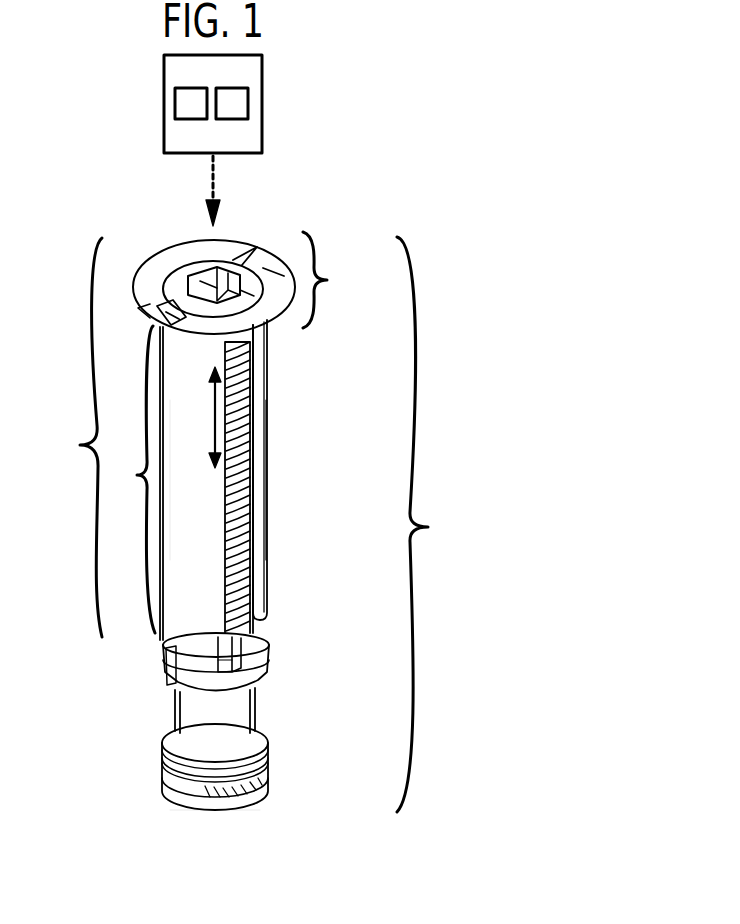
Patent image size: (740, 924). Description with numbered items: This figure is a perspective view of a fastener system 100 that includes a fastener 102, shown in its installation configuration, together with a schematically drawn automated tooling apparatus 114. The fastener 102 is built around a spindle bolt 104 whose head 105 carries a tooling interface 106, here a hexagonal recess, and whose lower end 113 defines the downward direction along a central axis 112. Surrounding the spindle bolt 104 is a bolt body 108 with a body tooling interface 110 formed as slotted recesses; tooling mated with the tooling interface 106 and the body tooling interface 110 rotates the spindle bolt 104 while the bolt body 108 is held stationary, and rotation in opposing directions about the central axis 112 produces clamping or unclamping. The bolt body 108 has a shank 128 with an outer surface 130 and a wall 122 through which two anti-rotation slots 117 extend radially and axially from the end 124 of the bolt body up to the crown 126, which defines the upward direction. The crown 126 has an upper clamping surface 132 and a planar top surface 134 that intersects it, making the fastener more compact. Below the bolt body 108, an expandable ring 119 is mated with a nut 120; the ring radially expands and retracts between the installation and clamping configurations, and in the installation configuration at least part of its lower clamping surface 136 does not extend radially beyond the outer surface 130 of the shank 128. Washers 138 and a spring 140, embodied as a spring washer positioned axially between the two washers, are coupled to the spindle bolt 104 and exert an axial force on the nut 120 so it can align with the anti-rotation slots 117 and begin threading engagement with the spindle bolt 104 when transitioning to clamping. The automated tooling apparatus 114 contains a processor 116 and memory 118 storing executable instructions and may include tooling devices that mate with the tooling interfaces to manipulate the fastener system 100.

The fastener system 100 is at (609, 102).
The fastener 102 is at (431, 524).
The spindle bolt 104 is at (191, 262).
The head 105 is at (254, 296).
The tooling interface 106 is at (224, 272).
The bolt body 108 is at (73, 437).
The body tooling interface 110 is at (159, 310).
The central axis 112 is at (214, 425).
The end 113 is at (229, 822).
The automated tooling apparatus 114 is at (263, 94).
The processor 116 is at (234, 88).
The anti-rotation slots 117 is at (264, 440).
The memory 118 is at (189, 119).
The expandable ring 119 is at (147, 654).
The nut 120 is at (273, 698).
The wall 122 is at (272, 526).
The end 124 is at (203, 662).
The crown 126 is at (245, 283).
The shank 128 is at (185, 480).
The outer surface 130 is at (204, 538).
The upper clamping surface 132 is at (138, 308).
The top surface 134 is at (284, 274).
The lower clamping surface 136 is at (168, 651).
The washers 138 is at (156, 742).
The spring 140 is at (271, 766).